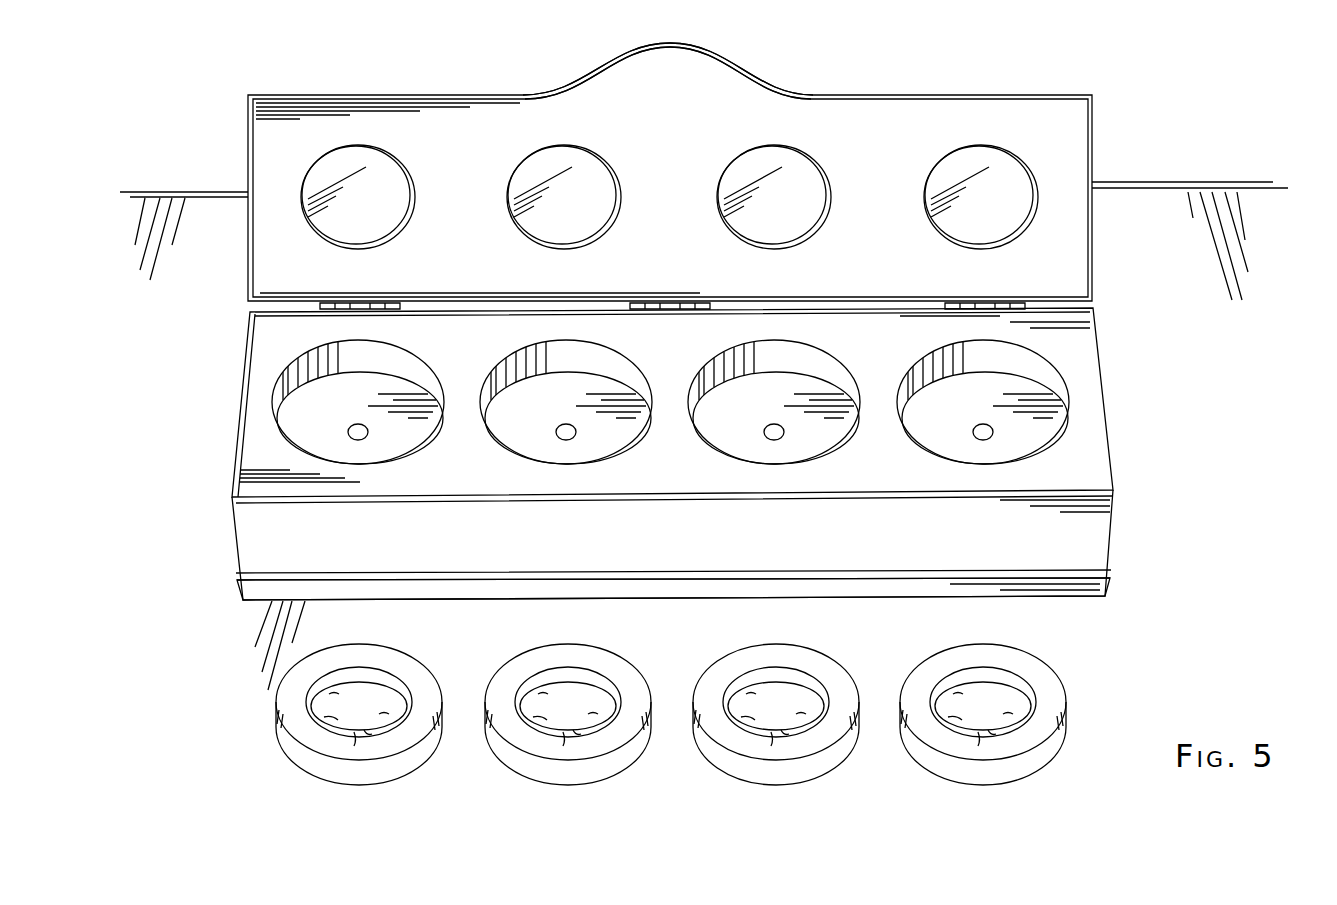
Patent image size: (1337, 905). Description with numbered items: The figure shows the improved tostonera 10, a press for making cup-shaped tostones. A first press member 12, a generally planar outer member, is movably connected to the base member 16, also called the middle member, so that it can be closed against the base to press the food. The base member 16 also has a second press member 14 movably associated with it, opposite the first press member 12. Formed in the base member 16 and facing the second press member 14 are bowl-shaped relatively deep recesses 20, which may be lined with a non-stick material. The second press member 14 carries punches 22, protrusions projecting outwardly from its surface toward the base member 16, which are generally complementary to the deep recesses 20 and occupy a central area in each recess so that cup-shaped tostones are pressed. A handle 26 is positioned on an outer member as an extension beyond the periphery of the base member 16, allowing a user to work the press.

The tostonera 10 is at (1067, 68).
The first press member 12 is at (1080, 255).
The second press member 14 is at (1104, 590).
The base member 16 is at (1093, 472).
The deep recesses 20 is at (1038, 365).
The punches 22 is at (1008, 163).
The handle 26 is at (741, 58).